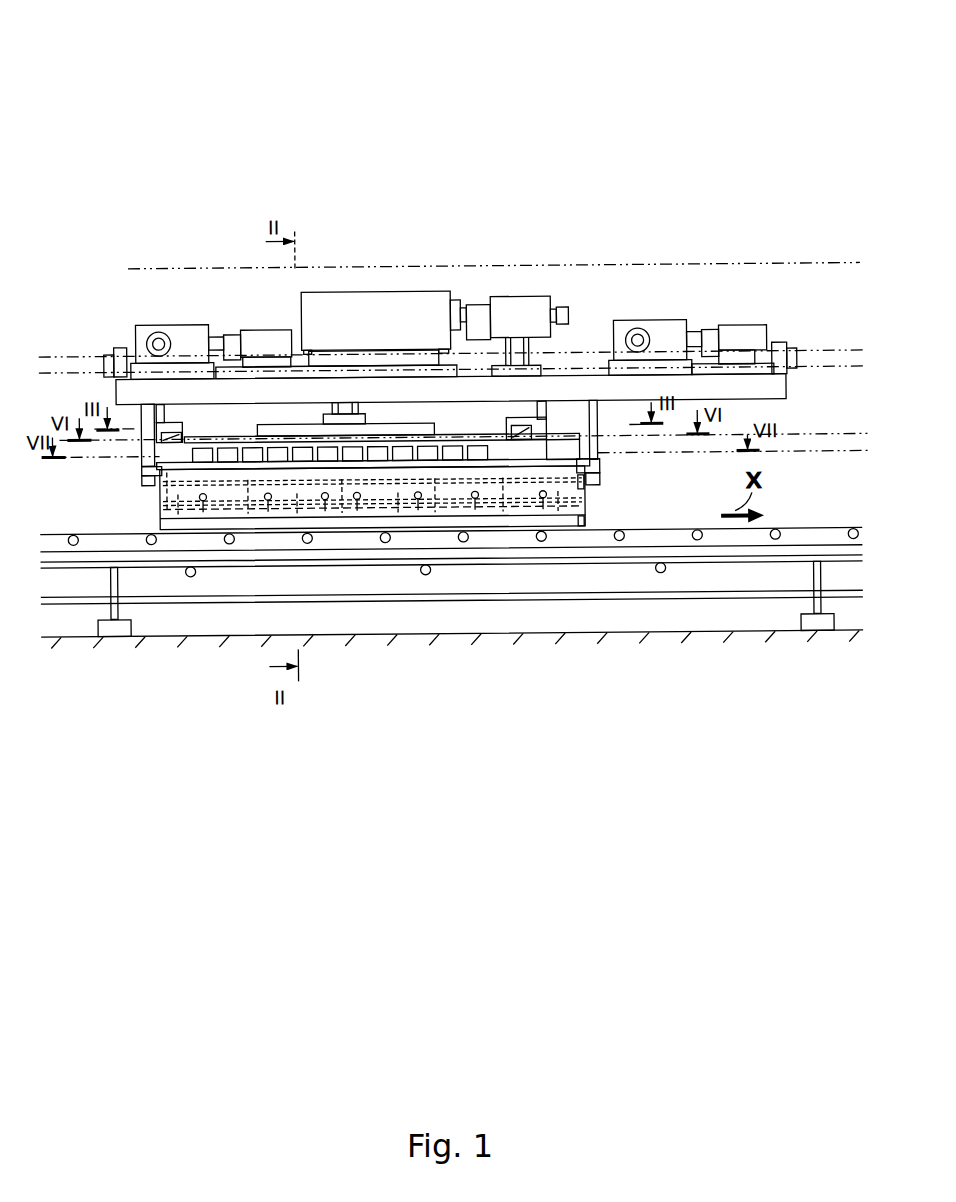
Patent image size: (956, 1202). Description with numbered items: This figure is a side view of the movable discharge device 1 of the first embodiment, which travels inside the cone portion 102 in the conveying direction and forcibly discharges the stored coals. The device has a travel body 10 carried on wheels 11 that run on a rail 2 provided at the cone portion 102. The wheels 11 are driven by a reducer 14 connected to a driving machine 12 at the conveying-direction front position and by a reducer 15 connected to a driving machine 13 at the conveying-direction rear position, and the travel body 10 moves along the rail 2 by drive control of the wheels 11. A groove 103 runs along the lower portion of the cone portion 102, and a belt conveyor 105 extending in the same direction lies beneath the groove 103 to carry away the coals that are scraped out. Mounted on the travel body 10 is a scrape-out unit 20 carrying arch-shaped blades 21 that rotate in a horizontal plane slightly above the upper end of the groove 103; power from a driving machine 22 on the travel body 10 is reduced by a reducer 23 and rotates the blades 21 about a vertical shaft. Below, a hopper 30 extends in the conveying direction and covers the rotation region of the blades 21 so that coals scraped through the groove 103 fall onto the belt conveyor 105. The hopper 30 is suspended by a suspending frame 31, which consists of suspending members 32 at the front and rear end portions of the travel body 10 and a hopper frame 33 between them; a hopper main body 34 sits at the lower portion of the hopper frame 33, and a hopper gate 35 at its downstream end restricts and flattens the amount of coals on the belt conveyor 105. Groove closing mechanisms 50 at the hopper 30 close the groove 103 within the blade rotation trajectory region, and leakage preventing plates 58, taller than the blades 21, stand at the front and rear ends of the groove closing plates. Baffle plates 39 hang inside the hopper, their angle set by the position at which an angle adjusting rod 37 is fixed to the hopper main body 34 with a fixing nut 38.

The movable discharge device 1 is at (491, 140).
The rail 2 is at (818, 352).
The travel body 10 is at (578, 375).
The wheels 11 is at (155, 333).
The driving machine 12 is at (258, 335).
The driving machine 13 is at (737, 328).
The reducer 14 is at (190, 330).
The reducer 15 is at (665, 329).
The scrape-out unit 20 is at (374, 420).
The blades 21 is at (403, 424).
The driving machine 22 is at (513, 305).
The reducer 23 is at (400, 292).
The hopper 30 is at (362, 520).
The suspending frame 31 is at (603, 479).
The suspending members 32 is at (148, 422).
The hopper frame 33 is at (510, 515).
The hopper main body 34 is at (452, 512).
The hopper gate 35 is at (584, 514).
The angle adjusting rod 37 is at (481, 510).
The fixing nut 38 is at (372, 508).
The baffle plates 39 is at (297, 512).
The groove closing mechanisms 50 is at (232, 436).
The leakage preventing plates 58 is at (158, 443).
The cone portion 102 is at (733, 266).
The groove 103 is at (807, 448).
The belt conveyor 105 is at (836, 536).